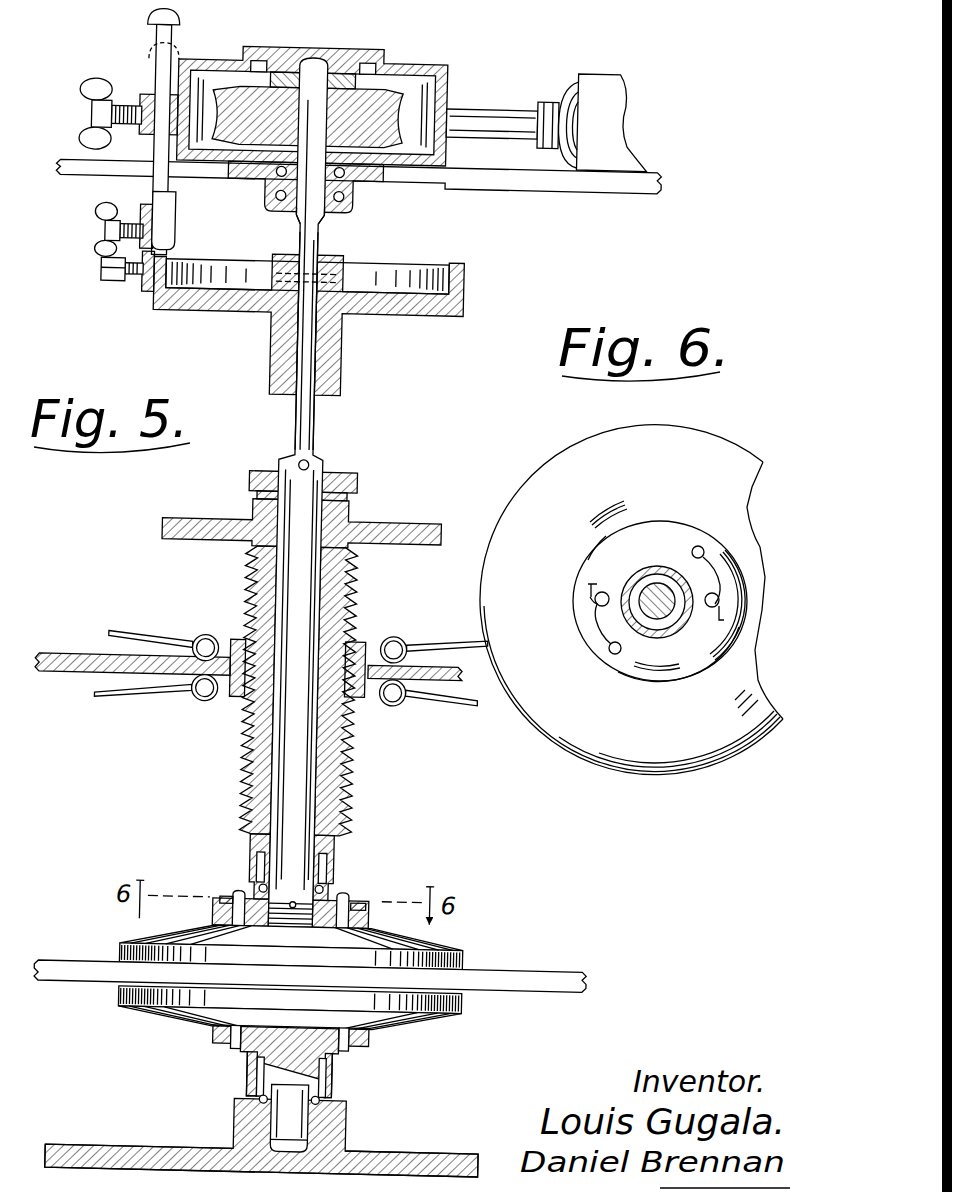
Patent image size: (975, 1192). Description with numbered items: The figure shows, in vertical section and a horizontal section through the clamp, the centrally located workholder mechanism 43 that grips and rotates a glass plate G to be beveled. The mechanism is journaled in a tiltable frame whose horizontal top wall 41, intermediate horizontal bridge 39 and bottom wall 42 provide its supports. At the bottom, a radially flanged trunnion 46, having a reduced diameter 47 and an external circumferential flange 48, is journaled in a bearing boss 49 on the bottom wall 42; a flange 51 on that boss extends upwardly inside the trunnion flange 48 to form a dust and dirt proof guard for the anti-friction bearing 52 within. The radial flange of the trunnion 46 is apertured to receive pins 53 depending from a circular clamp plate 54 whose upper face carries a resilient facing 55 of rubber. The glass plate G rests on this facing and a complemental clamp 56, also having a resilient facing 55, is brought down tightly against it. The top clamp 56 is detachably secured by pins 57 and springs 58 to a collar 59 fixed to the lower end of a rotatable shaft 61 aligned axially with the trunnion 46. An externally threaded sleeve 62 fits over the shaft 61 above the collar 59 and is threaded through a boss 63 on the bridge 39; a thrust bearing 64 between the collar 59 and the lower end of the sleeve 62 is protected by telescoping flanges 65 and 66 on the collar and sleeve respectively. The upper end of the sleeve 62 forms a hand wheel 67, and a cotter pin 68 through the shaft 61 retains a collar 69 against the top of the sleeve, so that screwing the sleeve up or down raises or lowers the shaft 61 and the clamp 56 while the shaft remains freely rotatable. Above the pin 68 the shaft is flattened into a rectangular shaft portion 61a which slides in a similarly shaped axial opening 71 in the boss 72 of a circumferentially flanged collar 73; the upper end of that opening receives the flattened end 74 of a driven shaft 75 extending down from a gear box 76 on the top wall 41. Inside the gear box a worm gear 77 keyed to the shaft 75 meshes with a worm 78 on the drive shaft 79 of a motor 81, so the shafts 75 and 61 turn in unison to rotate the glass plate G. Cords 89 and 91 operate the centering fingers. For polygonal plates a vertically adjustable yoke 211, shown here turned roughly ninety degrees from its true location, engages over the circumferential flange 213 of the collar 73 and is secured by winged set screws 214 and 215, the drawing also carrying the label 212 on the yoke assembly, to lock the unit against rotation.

In FIG. 5, the intermediate horizontal bridge 39 is at (88, 660).
In FIG. 5, the top wall 41 is at (606, 188).
In FIG. 5, the bottom wall 42 is at (87, 1152).
In FIG. 5, the workholder mechanism 43 is at (394, 854).
In FIG. 5, the radially flanged trunnion 46 is at (389, 1051).
In FIG. 5, the reduced diameter 47 is at (318, 1128).
In FIG. 5, the external circumferential flange 48 is at (356, 1085).
In FIG. 5, the bearing boss 49 is at (258, 1126).
In FIG. 5, the flange 51 is at (272, 1072).
In FIG. 5, the anti-friction bearing 52 is at (284, 1106).
In FIG. 5, the pins 53 is at (252, 1052).
In FIG. 5, the circular clamp plate 54 is at (484, 1004).
In FIG. 5, the resilient facing 55 is at (146, 971).
In FIG. 5, the complemental clamp 56 is at (462, 947).
In FIG. 6, the complemental clamp 56 is at (710, 449).
In FIG. 5, the pins 57 is at (250, 897).
In FIG. 6, the pins 57 is at (603, 591).
In FIG. 5, the springs 58 is at (242, 899).
In FIG. 6, the springs 58 is at (712, 572).
In FIG. 5, the collar 59 is at (232, 920).
In FIG. 6, the collar 59 is at (727, 638).
In FIG. 5, the rotatable shaft 61 is at (312, 764).
In FIG. 6, the rotatable shaft 61 is at (664, 619).
In FIG. 5, the rectangular shaft portion 61a is at (303, 417).
In FIG. 5, the externally threaded sleeve 62 is at (369, 797).
In FIG. 5, the boss 63 is at (376, 639).
In FIG. 5, the thrust bearing 64 is at (273, 875).
In FIG. 5, the telescoping flange 65 is at (364, 872).
In FIG. 6, the telescoping flange 65 is at (647, 635).
In FIG. 5, the telescoping flange 66 is at (266, 837).
In FIG. 5, the hand wheel 67 is at (171, 524).
In FIG. 5, the cotter pin 68 is at (318, 463).
In FIG. 5, the collar 69 is at (257, 480).
In FIG. 5, the axial opening 71 is at (320, 322).
In FIG. 5, the boss 72 is at (279, 361).
In FIG. 5, the circumferentially flanged collar 73 is at (457, 315).
In FIG. 5, the flattened end 74 is at (312, 263).
In FIG. 5, the driven shaft 75 is at (302, 219).
In FIG. 5, the gear box 76 is at (428, 63).
In FIG. 5, the worm gear 77 is at (207, 74).
In FIG. 5, the worm 78 is at (352, 86).
In FIG. 5, the drive shaft 79 is at (478, 112).
In FIG. 5, the motor 81 is at (614, 100).
In FIG. 5, the cords 89 is at (142, 701).
In FIG. 5, the cords 91 is at (158, 638).
In FIG. 5, the vertically adjustable yoke 211 is at (175, 236).
In FIG. 5, the rod 212 is at (150, 92).
In FIG. 5, the circumferential flange 213 is at (158, 288).
In FIG. 5, the winged set screw 214 is at (106, 241).
In FIG. 5, the winged set screw 215 is at (92, 113).
In FIG. 5, the glass plate G is at (71, 972).